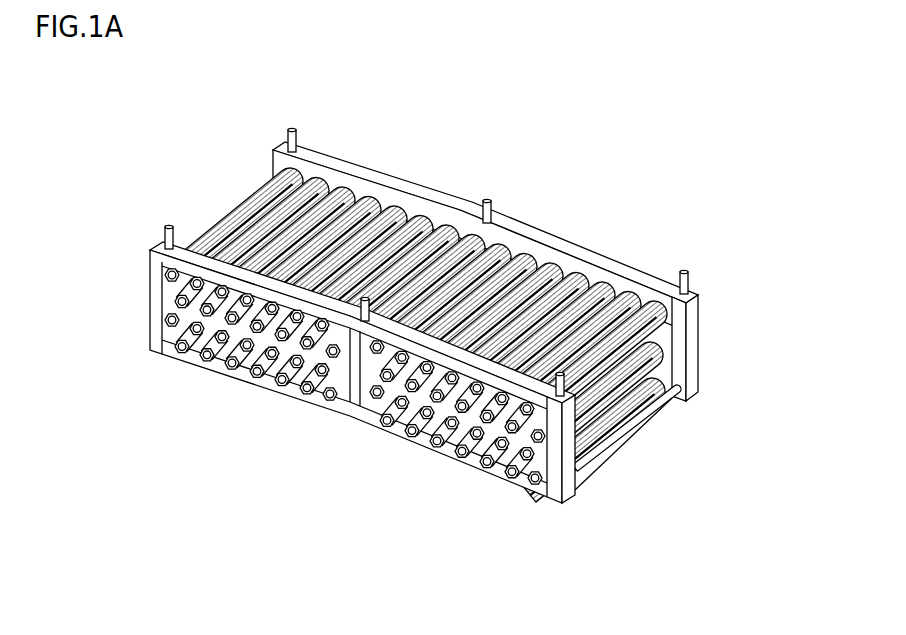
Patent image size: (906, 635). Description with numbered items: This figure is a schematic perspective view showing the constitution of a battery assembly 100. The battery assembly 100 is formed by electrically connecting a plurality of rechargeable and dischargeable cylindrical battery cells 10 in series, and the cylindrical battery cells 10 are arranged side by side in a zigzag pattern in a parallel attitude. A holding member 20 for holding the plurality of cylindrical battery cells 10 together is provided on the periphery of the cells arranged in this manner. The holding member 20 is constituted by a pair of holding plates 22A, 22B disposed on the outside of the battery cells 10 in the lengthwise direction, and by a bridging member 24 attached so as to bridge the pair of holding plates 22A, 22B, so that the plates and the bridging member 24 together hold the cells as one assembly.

The battery assembly 100 is at (438, 152).
The cylindrical battery cells 10 is at (563, 280).
The holding member 20 is at (766, 412).
The holding plate 22A is at (575, 483).
The holding plate 22B is at (693, 380).
The bridging member 24 is at (633, 423).